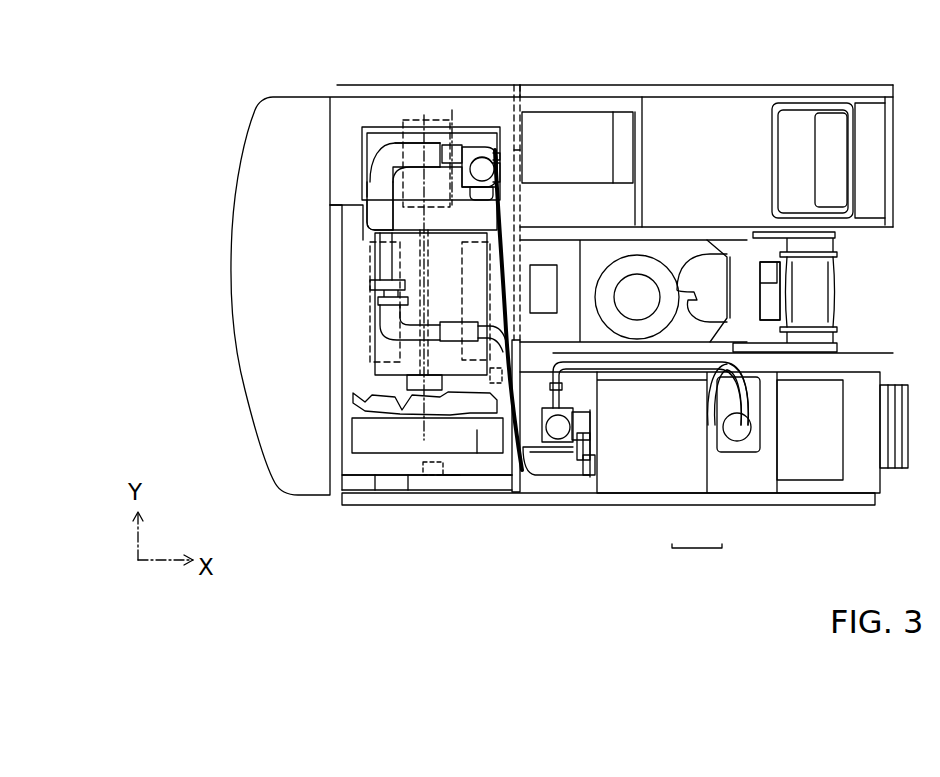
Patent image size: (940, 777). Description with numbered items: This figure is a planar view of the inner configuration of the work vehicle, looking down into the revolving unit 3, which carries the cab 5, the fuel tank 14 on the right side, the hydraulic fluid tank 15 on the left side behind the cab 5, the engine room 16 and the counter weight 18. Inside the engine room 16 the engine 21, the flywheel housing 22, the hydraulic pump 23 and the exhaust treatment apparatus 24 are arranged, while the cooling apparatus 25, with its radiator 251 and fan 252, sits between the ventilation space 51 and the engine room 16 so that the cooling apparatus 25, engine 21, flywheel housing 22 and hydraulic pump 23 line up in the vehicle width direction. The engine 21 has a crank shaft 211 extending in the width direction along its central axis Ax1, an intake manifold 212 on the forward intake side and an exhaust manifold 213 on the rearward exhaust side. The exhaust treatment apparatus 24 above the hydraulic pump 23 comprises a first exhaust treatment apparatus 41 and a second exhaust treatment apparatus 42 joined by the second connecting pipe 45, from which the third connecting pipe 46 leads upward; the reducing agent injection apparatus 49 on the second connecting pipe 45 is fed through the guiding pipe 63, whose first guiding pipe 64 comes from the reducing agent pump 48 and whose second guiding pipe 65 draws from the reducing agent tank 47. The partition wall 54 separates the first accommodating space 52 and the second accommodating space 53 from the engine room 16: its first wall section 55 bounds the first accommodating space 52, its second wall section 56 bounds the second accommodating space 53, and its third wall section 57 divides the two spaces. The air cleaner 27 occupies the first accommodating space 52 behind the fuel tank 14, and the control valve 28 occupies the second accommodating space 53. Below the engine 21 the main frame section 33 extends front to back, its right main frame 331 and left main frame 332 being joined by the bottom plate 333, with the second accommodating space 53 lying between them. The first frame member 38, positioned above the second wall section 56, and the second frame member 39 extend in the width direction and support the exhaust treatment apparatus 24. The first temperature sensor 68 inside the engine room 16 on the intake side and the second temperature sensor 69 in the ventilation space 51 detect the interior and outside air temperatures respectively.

The revolving unit 3 is at (558, 75).
The cab 5 is at (732, 107).
The fuel tank 14 is at (600, 378).
The hydraulic fluid tank 15 is at (583, 130).
The engine room 16 is at (349, 255).
The counter weight 18 is at (293, 107).
The engine 21 is at (337, 311).
The flywheel housing 22 is at (452, 110).
The hydraulic pump 23 is at (430, 118).
The exhaust treatment apparatus 24 is at (340, 127).
The cooling apparatus 25 is at (383, 463).
The air cleaner 27 is at (545, 448).
The control valve 28 is at (543, 270).
The main frame section 33 is at (825, 294).
The first frame member 38 is at (511, 472).
The second frame member 39 is at (350, 425).
The first exhaust treatment apparatus 41 is at (373, 141).
The second exhaust treatment apparatus 42 is at (367, 213).
The second connecting pipe 45 is at (412, 150).
The third connecting pipe 46 is at (473, 146).
The reducing agent tank 47 is at (738, 450).
The reducing agent pump 48 is at (587, 476).
The reducing agent injection apparatus 49 is at (495, 148).
The ventilation space 51 is at (415, 471).
The first accommodating space 52 is at (575, 461).
The second accommodating space 53 is at (567, 253).
The partition wall 54 is at (524, 160).
The first wall section 55 is at (477, 430).
The second wall section 56 is at (522, 85).
The third wall section 57 is at (573, 377).
The guiding pipe 63 is at (697, 559).
The first guiding pipe 64 is at (497, 307).
The second guiding pipe 65 is at (722, 374).
The first temperature sensor 68 is at (445, 476).
The second temperature sensor 69 is at (440, 477).
The crank shaft 211 is at (367, 318).
The intake manifold 212 is at (370, 350).
The exhaust manifold 213 is at (375, 300).
The radiator 251 is at (357, 440).
The fan 252 is at (357, 400).
The right main frame 331 is at (745, 347).
The left main frame 332 is at (745, 237).
The bottom plate 333 is at (778, 293).
The central axis Ax1 is at (424, 424).